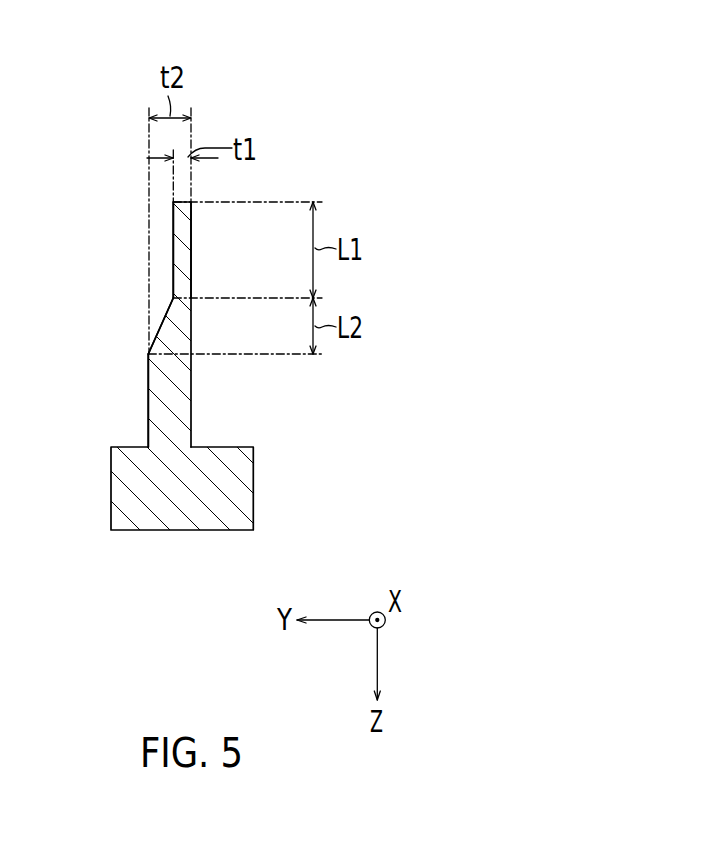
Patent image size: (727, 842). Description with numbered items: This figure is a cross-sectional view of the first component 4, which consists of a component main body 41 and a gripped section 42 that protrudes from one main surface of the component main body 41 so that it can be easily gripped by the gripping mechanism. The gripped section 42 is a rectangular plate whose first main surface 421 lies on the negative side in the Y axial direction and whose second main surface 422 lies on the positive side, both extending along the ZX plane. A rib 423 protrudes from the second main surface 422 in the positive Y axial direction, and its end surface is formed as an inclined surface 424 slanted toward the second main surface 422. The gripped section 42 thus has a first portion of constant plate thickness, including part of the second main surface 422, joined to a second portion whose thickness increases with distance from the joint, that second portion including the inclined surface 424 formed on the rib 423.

The first component 4 is at (305, 78).
The component main body 41 is at (253, 477).
The gripped section 42 is at (358, 182).
The first main surface 421 is at (192, 222).
The second main surface 422 is at (168, 256).
The rib 423 is at (148, 400).
The inclined surface 424 is at (160, 320).